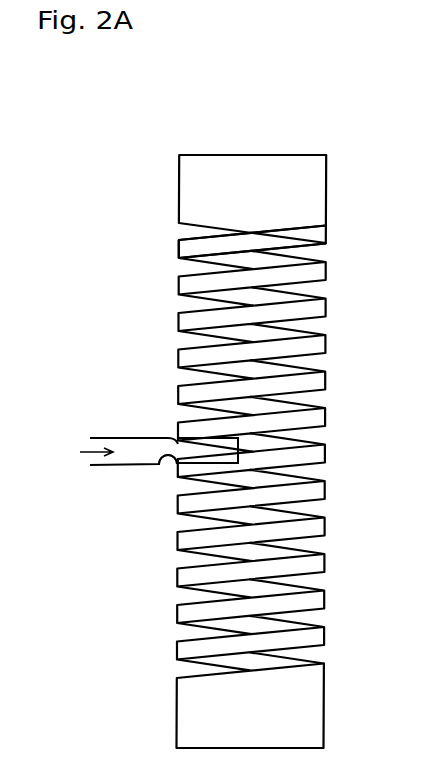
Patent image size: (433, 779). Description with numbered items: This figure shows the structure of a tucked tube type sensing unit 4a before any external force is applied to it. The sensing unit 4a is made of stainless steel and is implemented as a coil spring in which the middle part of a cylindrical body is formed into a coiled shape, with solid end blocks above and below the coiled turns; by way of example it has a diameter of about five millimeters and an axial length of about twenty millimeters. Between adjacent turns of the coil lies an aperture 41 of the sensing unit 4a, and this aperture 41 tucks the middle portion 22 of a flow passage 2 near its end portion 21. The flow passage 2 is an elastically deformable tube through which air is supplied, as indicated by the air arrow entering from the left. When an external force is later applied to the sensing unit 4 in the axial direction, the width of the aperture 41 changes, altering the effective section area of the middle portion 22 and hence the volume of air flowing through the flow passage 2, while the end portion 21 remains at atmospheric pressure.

The sensing unit 4 is at (256, 433).
The tucked tube type sensing unit 4a is at (292, 154).
The aperture 41 is at (318, 253).
The flow passage 2 is at (112, 437).
The end portion 21 is at (243, 447).
The middle portion 22 is at (165, 463).